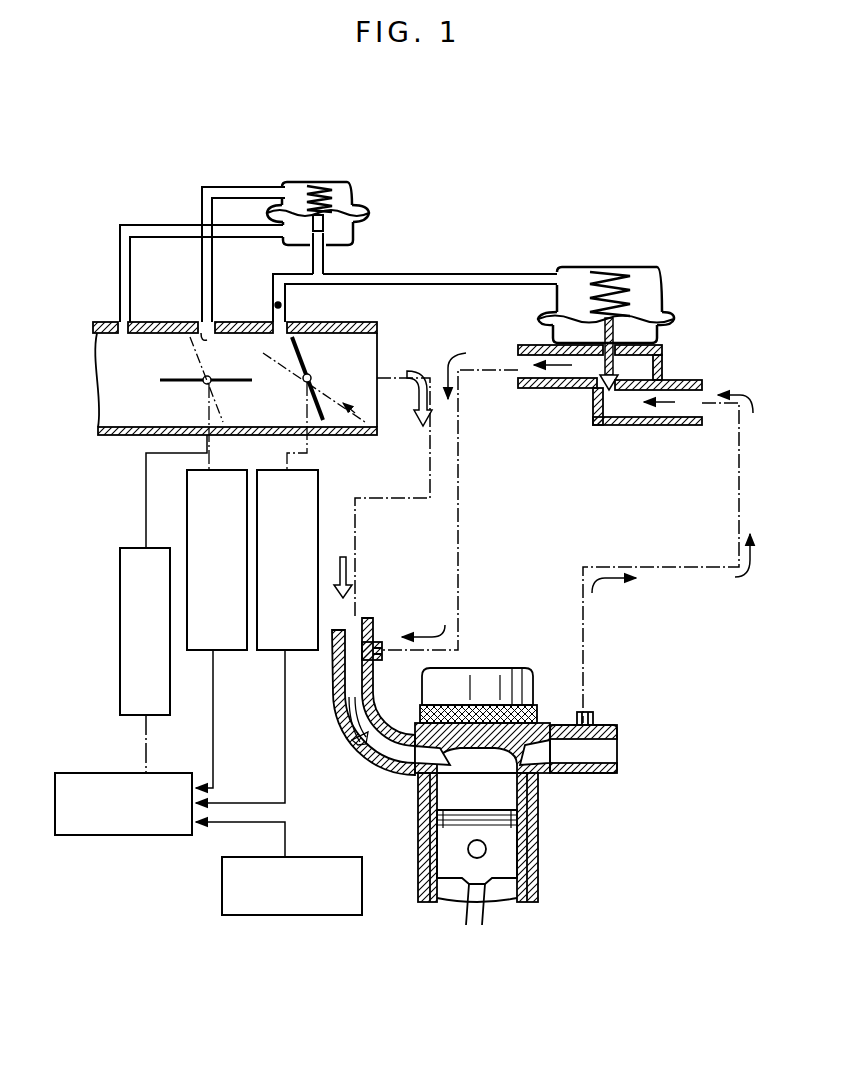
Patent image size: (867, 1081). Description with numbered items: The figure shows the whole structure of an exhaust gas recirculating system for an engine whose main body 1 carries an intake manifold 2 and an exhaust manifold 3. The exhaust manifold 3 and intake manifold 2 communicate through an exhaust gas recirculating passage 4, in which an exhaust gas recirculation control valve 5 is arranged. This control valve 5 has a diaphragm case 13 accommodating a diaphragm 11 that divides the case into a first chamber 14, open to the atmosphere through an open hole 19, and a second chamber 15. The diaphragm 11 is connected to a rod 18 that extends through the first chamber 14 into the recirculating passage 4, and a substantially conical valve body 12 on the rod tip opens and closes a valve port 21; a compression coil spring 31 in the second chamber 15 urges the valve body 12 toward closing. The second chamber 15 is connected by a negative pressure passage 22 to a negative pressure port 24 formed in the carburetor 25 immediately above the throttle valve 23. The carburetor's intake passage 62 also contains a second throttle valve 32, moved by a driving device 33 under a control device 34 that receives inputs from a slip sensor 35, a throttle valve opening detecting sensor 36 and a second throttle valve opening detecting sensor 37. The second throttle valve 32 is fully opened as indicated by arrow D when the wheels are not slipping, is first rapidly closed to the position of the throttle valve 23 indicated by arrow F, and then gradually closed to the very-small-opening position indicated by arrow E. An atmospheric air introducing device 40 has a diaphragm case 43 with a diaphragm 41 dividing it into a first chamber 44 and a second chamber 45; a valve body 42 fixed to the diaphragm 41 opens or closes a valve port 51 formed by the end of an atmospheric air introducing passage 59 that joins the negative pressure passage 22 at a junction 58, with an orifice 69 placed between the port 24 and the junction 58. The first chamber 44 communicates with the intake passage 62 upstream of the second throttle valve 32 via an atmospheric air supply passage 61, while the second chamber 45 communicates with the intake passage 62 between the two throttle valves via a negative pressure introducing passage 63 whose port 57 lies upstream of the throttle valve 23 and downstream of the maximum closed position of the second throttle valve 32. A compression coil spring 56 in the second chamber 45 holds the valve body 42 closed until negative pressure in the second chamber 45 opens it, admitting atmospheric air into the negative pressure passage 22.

The main body of an engine 1 is at (540, 862).
The intake manifold 2 is at (398, 777).
The exhaust manifold 3 is at (592, 774).
The exhaust gas recirculating passage 4 is at (660, 425).
The exhaust gas recirculation control valve 5 is at (614, 312).
The diaphragm 11 is at (668, 303).
The valve body 12 is at (602, 400).
The diaphragm case 13 is at (632, 268).
The first chamber 14 is at (556, 333).
The second chamber 15 is at (570, 282).
The rod 18 is at (604, 360).
The open hole 19 is at (662, 342).
The valve port 21 is at (619, 395).
The negative pressure passage 22 is at (502, 274).
The throttle valve 23 is at (323, 423).
The negative pressure port 24 is at (315, 349).
The carburetor 25 is at (353, 436).
The compression coil spring 31 is at (592, 282).
The second throttle valve 32 is at (171, 384).
The driving device 33 is at (120, 658).
The control device 34 is at (115, 836).
The slip sensor 35 is at (362, 912).
The throttle valve opening detecting sensor 36 is at (299, 650).
The second throttle valve opening detecting sensor 37 is at (232, 650).
The atmospheric air introducing device 40 is at (321, 188).
The diaphragm 41 is at (356, 200).
The valve body 42 is at (326, 224).
The diaphragm case 43 is at (347, 190).
The first chamber 44 is at (288, 246).
The second chamber 45 is at (292, 197).
The valve port 51 is at (310, 242).
The compression coil spring 56 is at (318, 182).
The junction (port) 57 is at (203, 333).
The junction 58 is at (318, 276).
The atmospheric air introducing passage 59 is at (327, 263).
The atmospheric air supply passage 61 is at (118, 247).
The intake passage 62 is at (252, 370).
The negative pressure introducing passage 63 is at (218, 187).
The orifice 69 is at (281, 305).
The arrow D is at (170, 436).
The arrow E is at (185, 348).
The arrow F is at (373, 436).